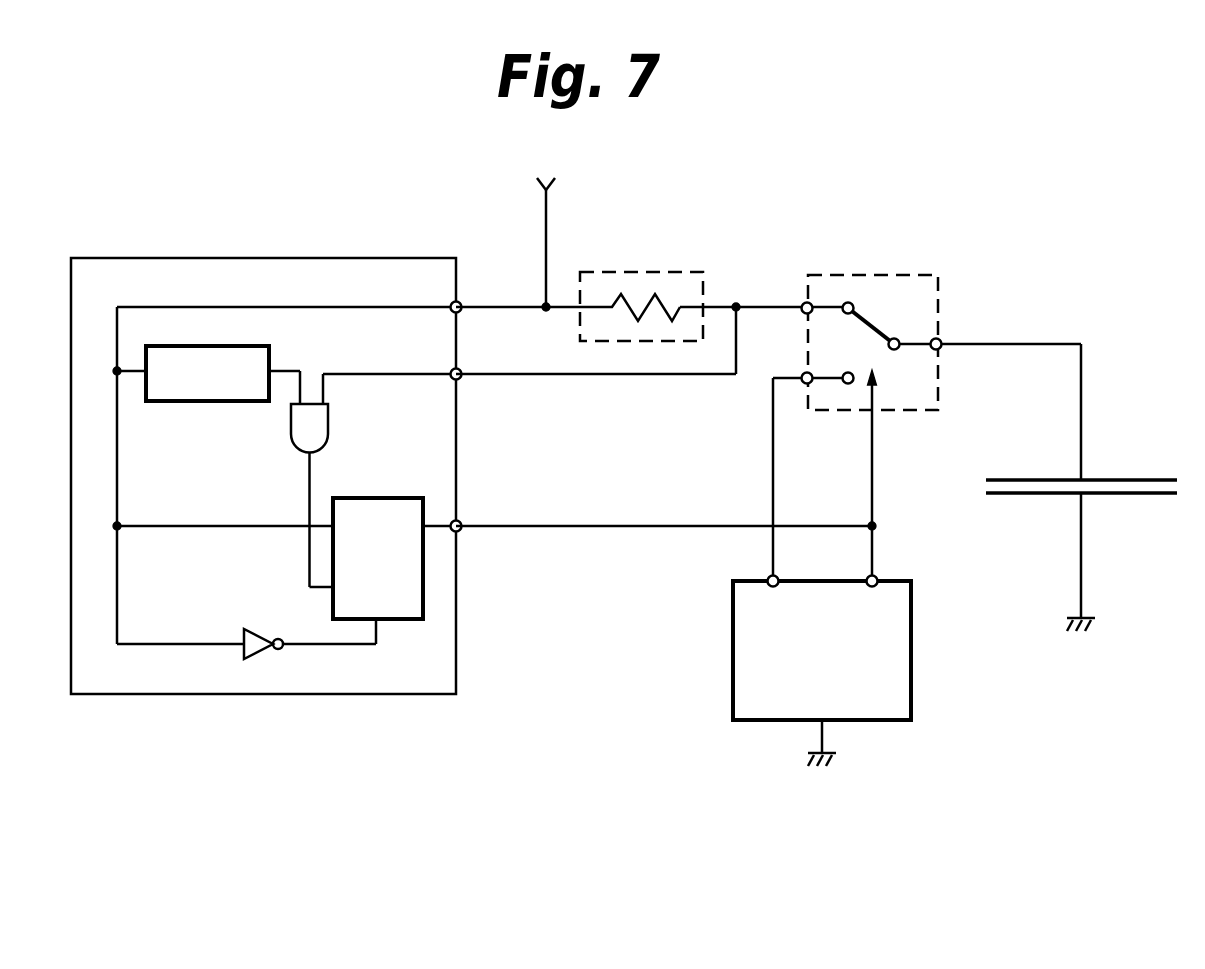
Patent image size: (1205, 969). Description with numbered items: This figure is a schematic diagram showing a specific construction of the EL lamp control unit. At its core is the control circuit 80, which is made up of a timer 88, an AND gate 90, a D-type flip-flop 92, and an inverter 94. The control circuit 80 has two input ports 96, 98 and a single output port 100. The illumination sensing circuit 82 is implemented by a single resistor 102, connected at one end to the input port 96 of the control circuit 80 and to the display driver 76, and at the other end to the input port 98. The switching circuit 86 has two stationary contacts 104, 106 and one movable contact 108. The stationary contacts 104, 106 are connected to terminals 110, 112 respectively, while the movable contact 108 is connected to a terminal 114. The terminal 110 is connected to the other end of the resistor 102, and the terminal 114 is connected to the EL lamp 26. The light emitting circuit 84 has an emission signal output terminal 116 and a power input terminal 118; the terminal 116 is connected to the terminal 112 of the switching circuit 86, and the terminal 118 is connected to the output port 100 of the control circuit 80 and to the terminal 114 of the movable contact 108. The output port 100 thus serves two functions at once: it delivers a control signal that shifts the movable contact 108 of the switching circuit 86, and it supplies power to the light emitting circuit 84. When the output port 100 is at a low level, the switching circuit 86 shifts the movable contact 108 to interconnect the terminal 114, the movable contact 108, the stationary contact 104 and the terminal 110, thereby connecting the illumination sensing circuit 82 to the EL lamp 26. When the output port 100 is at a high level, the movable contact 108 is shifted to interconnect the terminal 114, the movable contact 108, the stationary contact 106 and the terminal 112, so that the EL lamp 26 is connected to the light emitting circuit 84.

The EL lamp 26 is at (1108, 472).
The display driver 76 is at (585, 229).
The control circuit 80 is at (311, 258).
The illumination sensing circuit 82 is at (641, 311).
The light emitting circuit 84 is at (831, 629).
The switching circuit 86 is at (877, 332).
The timer 88 is at (222, 401).
The AND gate 90 is at (330, 428).
The D-type flip-flop 92 is at (406, 497).
The inverter 94 is at (257, 630).
The input port 96 is at (462, 302).
The input port 98 is at (462, 372).
The output port 100 is at (462, 520).
The resistor 102 is at (648, 343).
The stationary contact 104 is at (846, 302).
The stationary contact 106 is at (846, 384).
The movable contact 108 is at (899, 340).
The terminal 110 is at (803, 303).
The terminal 112 is at (805, 372).
The terminal 114 is at (940, 348).
The emission signal output terminal 116 is at (768, 577).
The power input terminal 118 is at (876, 577).